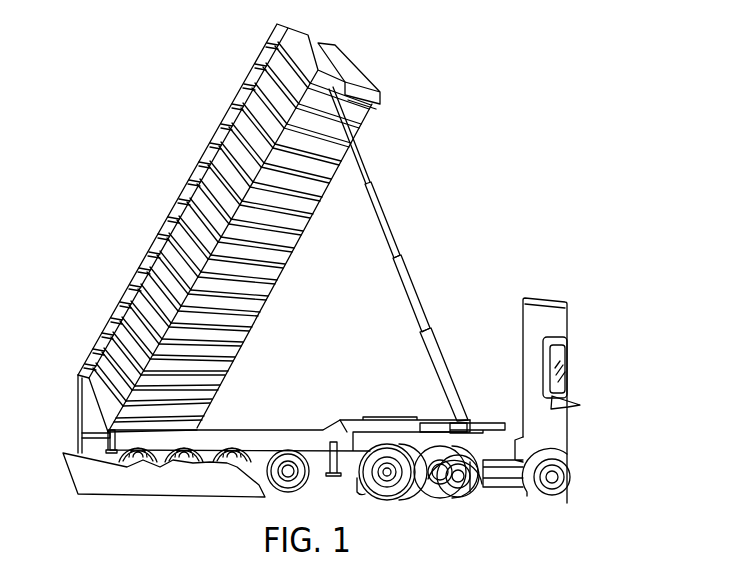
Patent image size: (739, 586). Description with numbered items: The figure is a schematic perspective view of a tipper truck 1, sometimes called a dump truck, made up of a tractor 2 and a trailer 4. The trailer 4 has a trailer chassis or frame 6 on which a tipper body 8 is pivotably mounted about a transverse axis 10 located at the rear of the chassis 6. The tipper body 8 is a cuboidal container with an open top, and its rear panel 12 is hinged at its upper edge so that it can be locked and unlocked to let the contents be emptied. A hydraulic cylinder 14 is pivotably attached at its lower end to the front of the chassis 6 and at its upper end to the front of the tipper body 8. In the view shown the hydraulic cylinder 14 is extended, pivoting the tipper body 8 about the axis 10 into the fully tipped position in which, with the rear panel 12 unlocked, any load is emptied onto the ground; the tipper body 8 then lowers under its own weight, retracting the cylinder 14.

The tipper truck 1 is at (442, 47).
The tractor 2 is at (546, 297).
The trailer 4 is at (392, 413).
The trailer chassis 6 is at (312, 441).
The tipper body 8 is at (165, 209).
The transverse axis 10 is at (110, 436).
The rear panel 12 is at (78, 419).
The hydraulic cylinder 14 is at (428, 287).